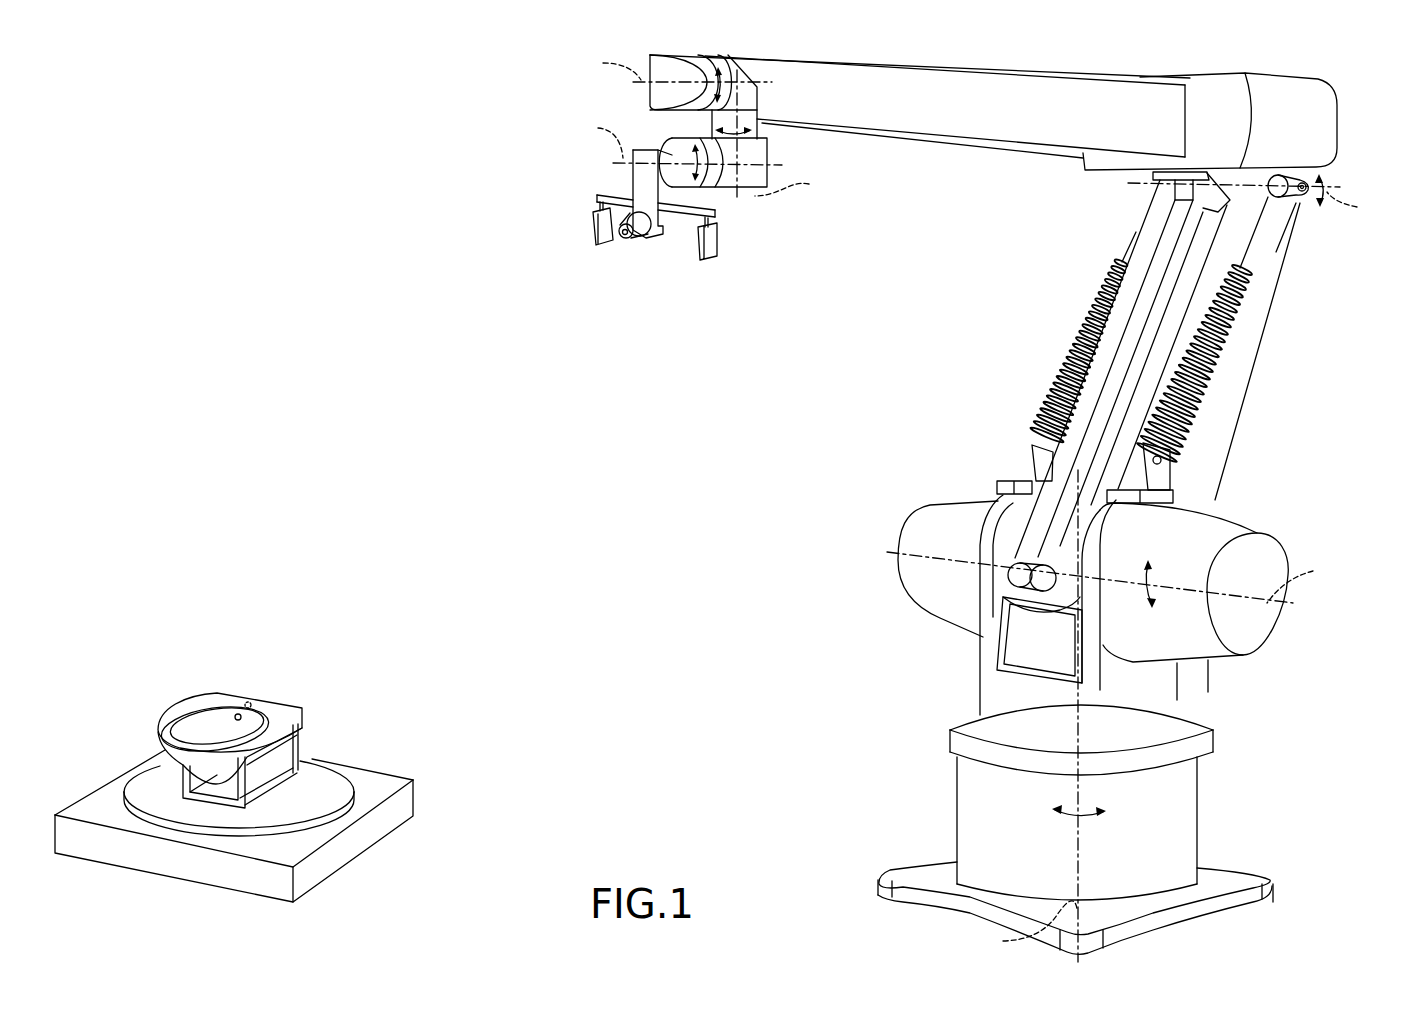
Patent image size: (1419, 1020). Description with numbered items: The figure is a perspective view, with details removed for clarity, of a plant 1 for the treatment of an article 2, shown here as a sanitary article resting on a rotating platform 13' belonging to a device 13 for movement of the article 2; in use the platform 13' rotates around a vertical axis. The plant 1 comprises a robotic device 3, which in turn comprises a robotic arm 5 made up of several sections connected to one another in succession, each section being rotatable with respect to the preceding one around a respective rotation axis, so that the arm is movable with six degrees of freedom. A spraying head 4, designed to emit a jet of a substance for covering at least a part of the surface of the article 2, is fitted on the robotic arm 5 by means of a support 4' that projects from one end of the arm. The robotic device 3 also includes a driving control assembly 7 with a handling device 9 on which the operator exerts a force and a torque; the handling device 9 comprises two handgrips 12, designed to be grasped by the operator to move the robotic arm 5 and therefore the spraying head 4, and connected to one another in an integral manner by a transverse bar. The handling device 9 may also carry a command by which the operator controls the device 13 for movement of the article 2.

The plant 1 is at (488, 145).
The article 2 is at (220, 694).
The robotic device 3 is at (1322, 64).
The spraying head 4 is at (617, 255).
The support 4' is at (653, 234).
The robotic arm 5 is at (988, 125).
The driving control assembly 7 is at (683, 321).
The handling device 9 is at (706, 275).
The handgrip 12 is at (590, 228).
The device for movement of the article 13 is at (255, 792).
The rotating platform 13' is at (302, 817).